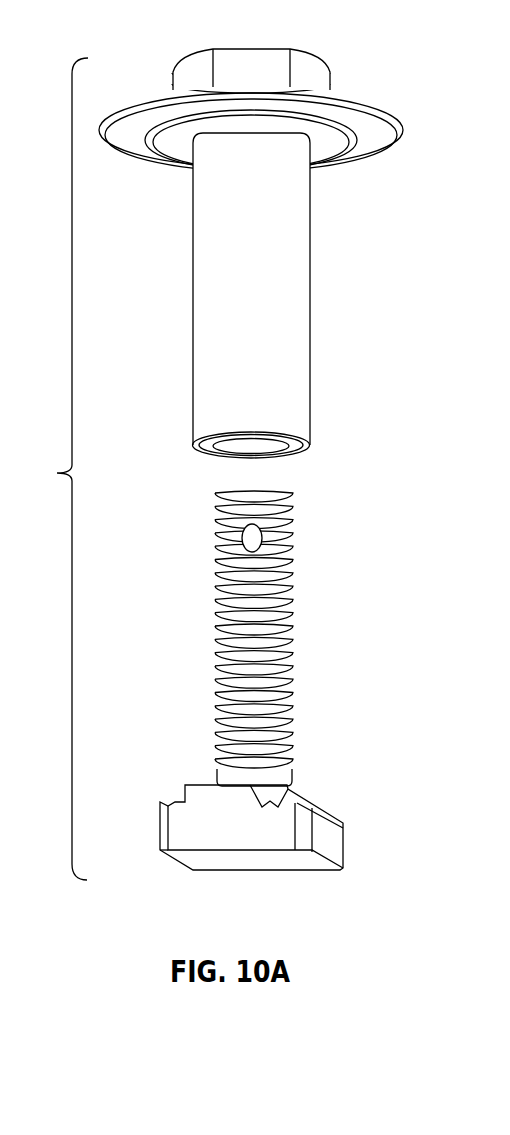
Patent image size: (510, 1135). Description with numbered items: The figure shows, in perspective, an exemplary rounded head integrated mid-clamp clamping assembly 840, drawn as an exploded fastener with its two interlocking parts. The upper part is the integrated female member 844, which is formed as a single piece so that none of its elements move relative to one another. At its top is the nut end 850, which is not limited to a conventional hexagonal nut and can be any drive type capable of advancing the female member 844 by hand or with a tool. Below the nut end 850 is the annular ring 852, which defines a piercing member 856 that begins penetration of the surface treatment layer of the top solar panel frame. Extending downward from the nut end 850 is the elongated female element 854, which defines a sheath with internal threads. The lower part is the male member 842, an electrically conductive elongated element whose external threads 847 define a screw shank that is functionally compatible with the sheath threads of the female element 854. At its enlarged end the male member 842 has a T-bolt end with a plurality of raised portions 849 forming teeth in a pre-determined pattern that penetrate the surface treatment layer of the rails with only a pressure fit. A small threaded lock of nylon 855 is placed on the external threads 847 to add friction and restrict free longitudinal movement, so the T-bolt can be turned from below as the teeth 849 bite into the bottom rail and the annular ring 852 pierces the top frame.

The rounded head mid-clamp clamping assembly 840 is at (47, 469).
The male member 842 is at (215, 643).
The integrated female member 844 is at (193, 295).
The external threads 847 is at (293, 680).
The raised portion 849 is at (320, 805).
The nut end 850 is at (275, 50).
The annular ring 852 is at (392, 125).
The elongated female element 854 is at (310, 400).
The nylon 855 is at (258, 540).
The piercing member 856 is at (353, 157).